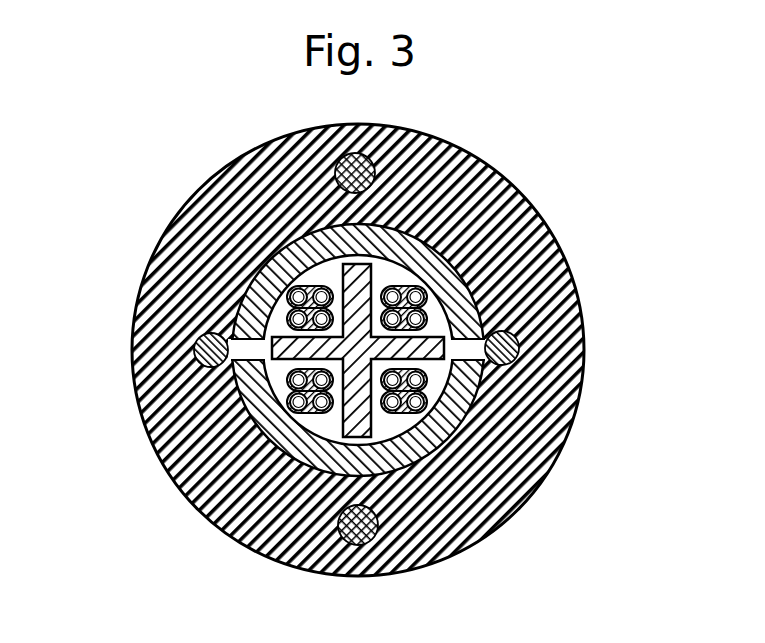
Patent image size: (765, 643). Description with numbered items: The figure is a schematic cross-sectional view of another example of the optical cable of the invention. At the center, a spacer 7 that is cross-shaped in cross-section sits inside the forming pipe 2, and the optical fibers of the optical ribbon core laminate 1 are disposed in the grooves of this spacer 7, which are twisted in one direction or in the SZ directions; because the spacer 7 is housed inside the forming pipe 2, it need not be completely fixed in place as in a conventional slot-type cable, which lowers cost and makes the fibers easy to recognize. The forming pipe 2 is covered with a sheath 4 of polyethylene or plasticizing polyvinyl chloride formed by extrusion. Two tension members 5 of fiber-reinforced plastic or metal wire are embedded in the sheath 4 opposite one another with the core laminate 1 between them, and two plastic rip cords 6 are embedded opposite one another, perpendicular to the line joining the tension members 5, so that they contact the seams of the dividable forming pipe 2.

The optical ribbon core laminate 1 is at (303, 283).
The forming pipe 2 is at (268, 266).
The sheath 4 is at (553, 160).
The tension member 5 is at (343, 160).
The rip cord 6 is at (205, 367).
The spacer 7 is at (444, 345).